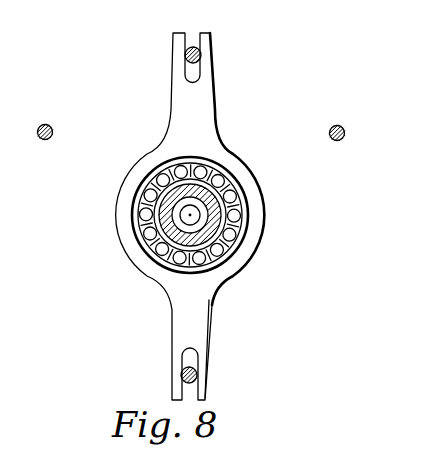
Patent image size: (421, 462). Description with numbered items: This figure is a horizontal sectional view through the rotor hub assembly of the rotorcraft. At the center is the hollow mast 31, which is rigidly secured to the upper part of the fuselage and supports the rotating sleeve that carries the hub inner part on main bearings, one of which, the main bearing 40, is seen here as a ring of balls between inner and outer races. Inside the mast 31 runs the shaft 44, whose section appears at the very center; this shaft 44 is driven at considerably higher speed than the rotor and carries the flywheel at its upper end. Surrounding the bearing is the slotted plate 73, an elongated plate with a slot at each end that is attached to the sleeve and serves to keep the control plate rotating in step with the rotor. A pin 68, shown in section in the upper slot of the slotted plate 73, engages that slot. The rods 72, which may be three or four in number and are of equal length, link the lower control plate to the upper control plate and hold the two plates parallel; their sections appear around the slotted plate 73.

The hollow mast 31 is at (212, 237).
The main bearing 40 is at (243, 226).
The shaft 44 is at (200, 213).
The pin 68 is at (199, 50).
The rods 72 is at (197, 377).
The slotted plate 73 is at (216, 95).